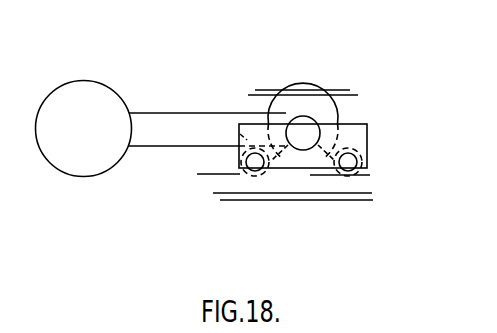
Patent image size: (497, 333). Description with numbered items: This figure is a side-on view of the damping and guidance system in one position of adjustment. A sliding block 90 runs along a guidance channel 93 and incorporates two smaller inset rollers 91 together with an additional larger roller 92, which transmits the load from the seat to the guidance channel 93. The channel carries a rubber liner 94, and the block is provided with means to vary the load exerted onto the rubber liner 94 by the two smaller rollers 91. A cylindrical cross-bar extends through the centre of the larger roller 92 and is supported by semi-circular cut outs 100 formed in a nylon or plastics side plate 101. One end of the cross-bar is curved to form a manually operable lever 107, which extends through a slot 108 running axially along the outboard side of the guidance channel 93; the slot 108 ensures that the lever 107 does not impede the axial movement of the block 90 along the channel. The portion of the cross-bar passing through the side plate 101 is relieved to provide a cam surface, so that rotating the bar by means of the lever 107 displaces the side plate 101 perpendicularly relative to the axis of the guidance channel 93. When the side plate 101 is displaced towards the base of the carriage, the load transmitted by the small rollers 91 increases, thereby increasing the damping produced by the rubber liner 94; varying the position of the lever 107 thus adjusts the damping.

The sliding block 90 is at (287, 166).
The inset rollers 91 is at (255, 172).
The larger roller 92 is at (313, 102).
The guidance channel 93 is at (272, 91).
The rubber liner 94 is at (319, 187).
The semi-circular cut outs 100 is at (298, 150).
The side plate 101 is at (239, 148).
The manually operable lever 107 is at (135, 144).
The slot 108 is at (207, 134).